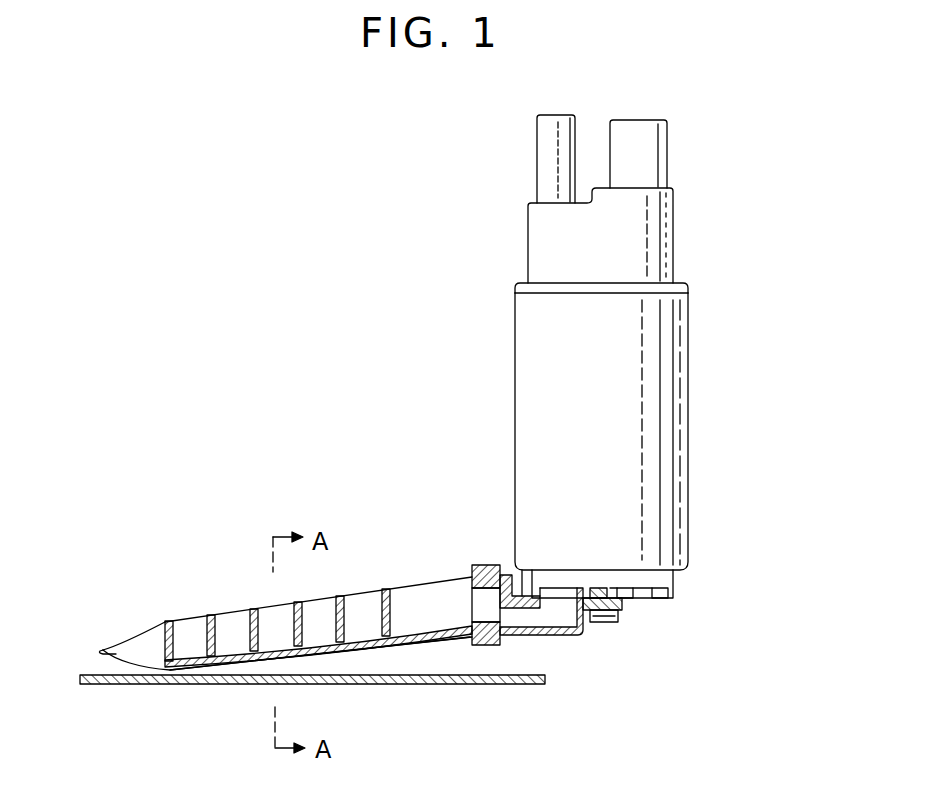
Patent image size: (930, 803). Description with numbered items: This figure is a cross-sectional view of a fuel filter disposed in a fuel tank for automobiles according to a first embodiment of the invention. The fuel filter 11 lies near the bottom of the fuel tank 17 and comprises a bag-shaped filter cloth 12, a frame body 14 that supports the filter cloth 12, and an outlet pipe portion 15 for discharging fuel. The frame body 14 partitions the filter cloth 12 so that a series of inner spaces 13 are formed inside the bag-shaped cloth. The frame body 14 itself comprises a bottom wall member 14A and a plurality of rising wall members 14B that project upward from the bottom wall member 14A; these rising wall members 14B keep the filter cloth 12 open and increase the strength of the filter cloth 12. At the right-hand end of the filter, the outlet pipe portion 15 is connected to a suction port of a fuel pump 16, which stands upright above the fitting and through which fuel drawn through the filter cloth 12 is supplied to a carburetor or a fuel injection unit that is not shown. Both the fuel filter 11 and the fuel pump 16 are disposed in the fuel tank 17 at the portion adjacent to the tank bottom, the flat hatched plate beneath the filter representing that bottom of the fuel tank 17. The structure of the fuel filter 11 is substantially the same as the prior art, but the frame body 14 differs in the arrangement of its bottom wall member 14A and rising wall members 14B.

The fuel filter 11 is at (421, 582).
The filter cloth 12 is at (150, 635).
The inner spaces 13 is at (320, 620).
The frame body 14 is at (198, 631).
The bottom wall member 14A is at (360, 662).
The rising wall members 14B is at (290, 622).
The outlet pipe portion 15 is at (578, 636).
The fuel pump 16 is at (675, 432).
The fuel tank 17 is at (483, 685).